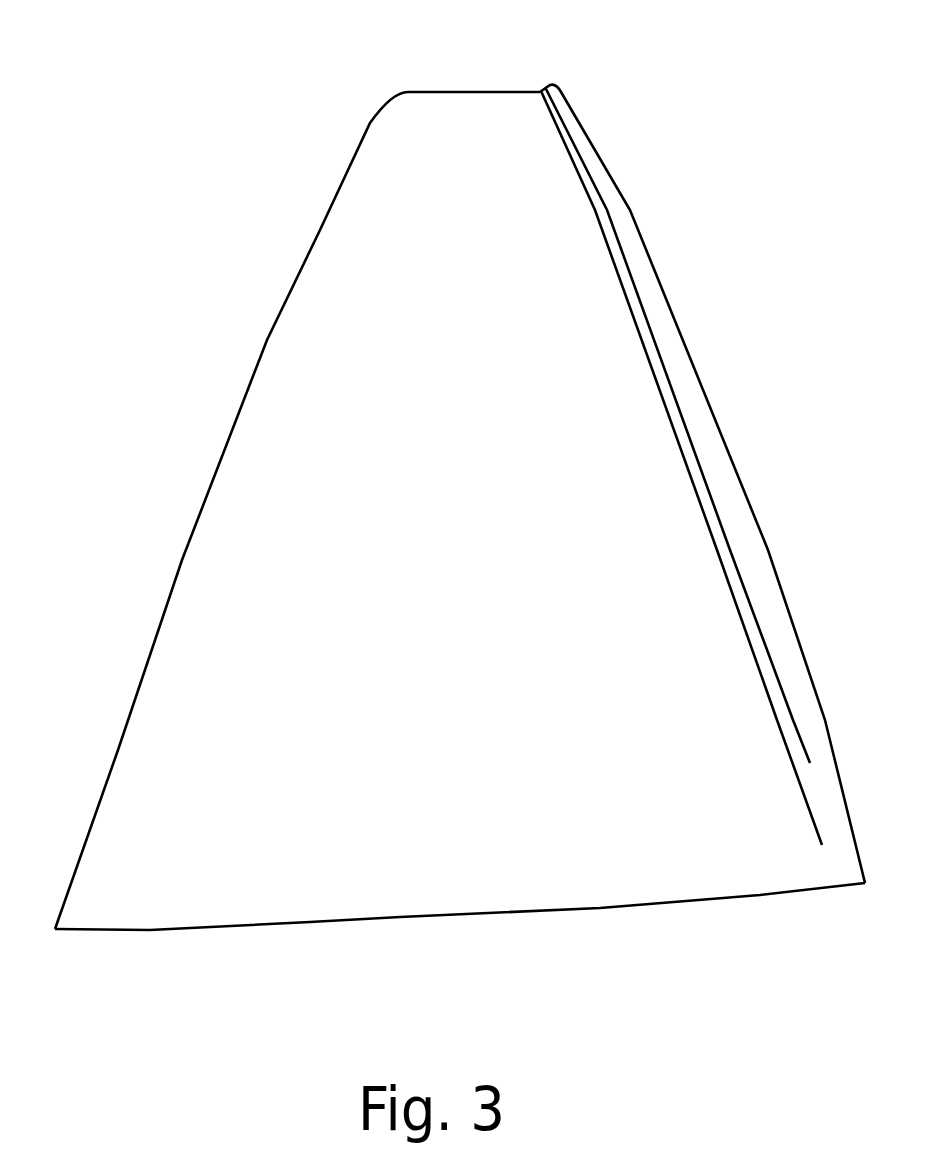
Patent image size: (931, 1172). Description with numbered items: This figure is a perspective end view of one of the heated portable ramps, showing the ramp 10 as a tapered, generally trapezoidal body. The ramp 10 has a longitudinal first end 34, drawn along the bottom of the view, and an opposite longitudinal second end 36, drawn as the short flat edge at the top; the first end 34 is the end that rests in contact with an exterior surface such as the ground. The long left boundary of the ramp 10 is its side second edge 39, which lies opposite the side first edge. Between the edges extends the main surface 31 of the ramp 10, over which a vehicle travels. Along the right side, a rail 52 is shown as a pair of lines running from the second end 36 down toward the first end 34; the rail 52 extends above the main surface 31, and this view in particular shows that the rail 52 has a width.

The ramp 10 is at (167, 92).
The main surface 31 is at (290, 540).
The longitudinal first end 34 is at (400, 917).
The longitudinal second end 36 is at (463, 91).
The side second edge 39 is at (248, 372).
The rail 52 is at (652, 318).